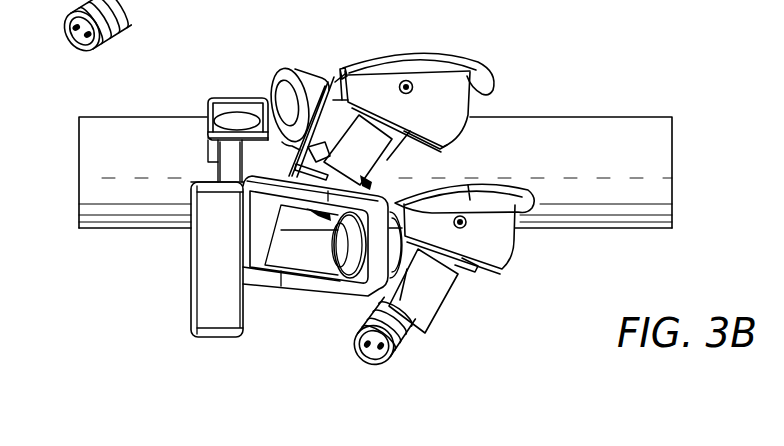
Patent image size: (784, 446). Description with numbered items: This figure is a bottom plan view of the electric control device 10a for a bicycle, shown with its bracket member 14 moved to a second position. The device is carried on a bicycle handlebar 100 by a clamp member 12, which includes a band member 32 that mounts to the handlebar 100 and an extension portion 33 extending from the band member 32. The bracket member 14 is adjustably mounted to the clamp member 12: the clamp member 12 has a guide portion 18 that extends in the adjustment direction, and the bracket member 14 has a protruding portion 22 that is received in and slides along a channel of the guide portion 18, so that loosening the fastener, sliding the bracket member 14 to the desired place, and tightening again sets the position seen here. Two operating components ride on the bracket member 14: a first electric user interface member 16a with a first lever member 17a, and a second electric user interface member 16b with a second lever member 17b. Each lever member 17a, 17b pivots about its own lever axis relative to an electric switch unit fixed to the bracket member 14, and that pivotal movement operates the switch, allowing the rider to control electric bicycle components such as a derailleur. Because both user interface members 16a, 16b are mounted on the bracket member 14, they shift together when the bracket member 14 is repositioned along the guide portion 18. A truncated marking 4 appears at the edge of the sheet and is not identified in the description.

The connector 4 is at (66, 28).
The electric control device 10a is at (602, 82).
The clamp member 12 is at (206, 317).
The bracket member 14 is at (277, 285).
The first electric user interface member 16a is at (407, 98).
The second electric user interface member 16b is at (488, 258).
The first lever member 17a is at (495, 86).
The second lever member 17b is at (540, 192).
The guide portion 18 is at (148, 265).
The protruding portion 22 is at (228, 152).
The band member 32 is at (257, 106).
The extension portion 33 is at (201, 238).
The bicycle handlebar 100 is at (672, 153).